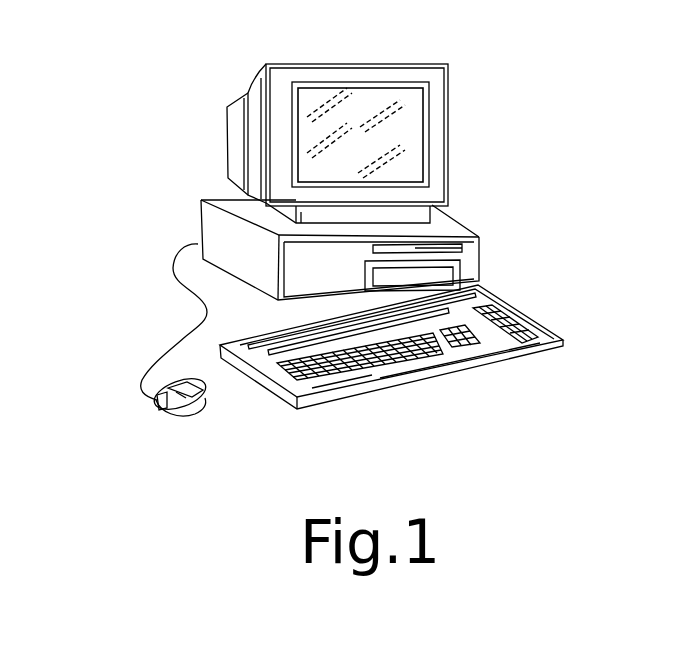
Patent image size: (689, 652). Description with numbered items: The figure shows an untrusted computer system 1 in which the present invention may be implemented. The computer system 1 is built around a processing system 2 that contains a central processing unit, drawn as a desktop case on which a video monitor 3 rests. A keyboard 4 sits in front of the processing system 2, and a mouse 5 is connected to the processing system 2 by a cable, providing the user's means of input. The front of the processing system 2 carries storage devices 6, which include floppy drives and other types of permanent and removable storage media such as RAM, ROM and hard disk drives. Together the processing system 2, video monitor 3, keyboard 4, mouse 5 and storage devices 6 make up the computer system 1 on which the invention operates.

The computer system 1 is at (108, 35).
The processing system 2 is at (205, 218).
The video monitor 3 is at (447, 144).
The keyboard 4 is at (368, 387).
The mouse 5 is at (205, 382).
The storage devices 6 is at (468, 247).